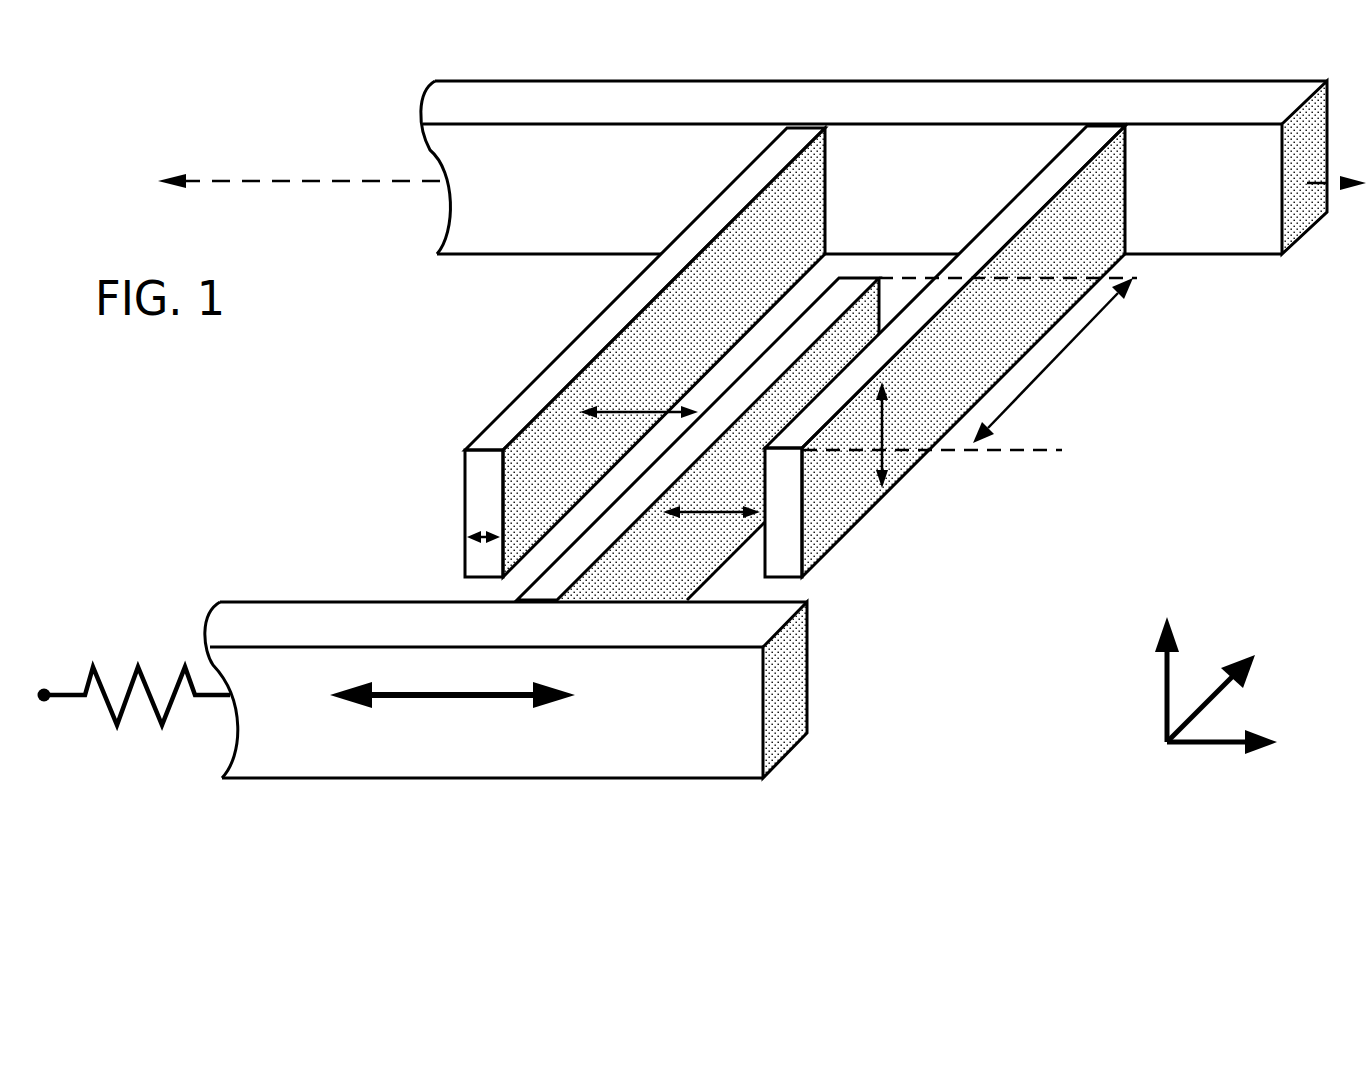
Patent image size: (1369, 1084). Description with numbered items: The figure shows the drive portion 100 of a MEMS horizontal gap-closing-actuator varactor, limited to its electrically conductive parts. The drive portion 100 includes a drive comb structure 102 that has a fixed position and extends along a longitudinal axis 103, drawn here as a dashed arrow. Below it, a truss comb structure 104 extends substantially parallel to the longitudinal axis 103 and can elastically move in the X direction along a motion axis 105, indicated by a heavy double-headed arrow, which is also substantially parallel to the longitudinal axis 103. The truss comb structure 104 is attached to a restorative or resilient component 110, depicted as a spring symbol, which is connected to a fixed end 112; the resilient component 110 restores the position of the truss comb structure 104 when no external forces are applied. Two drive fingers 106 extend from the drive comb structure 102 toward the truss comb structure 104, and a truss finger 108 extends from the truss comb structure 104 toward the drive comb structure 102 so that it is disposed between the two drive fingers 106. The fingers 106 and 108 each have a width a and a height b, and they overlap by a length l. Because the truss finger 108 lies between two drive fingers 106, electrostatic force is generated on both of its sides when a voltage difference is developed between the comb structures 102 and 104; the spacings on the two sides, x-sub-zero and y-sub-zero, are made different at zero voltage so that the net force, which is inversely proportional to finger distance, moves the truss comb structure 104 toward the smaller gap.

The drive portion 100 is at (204, 383).
The drive comb structure 102 is at (874, 167).
The longitudinal axis 103 is at (308, 179).
The truss comb structure 104 is at (506, 690).
The motion axis 105 is at (417, 699).
The drive finger 106 is at (770, 285).
The truss finger 108 is at (578, 526).
The resilient component 110 is at (140, 752).
The fixed end 112 is at (45, 636).